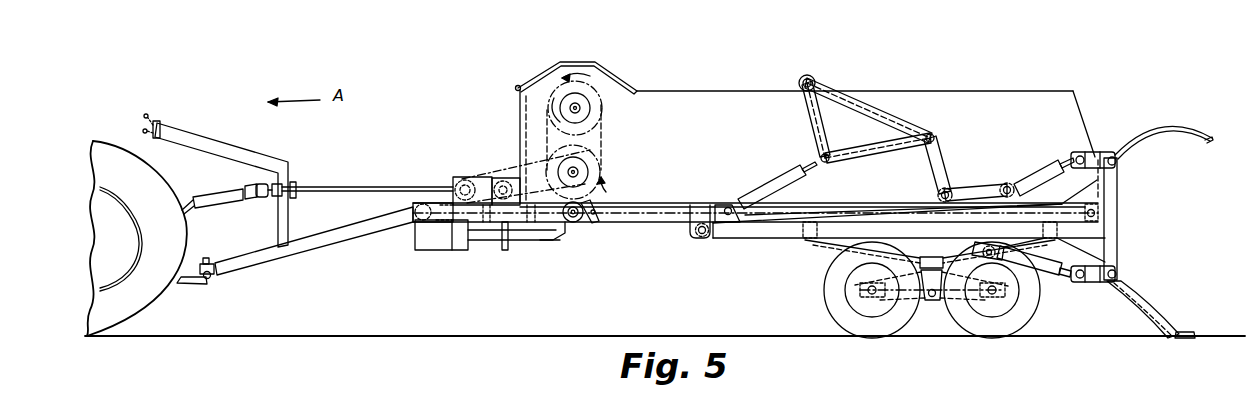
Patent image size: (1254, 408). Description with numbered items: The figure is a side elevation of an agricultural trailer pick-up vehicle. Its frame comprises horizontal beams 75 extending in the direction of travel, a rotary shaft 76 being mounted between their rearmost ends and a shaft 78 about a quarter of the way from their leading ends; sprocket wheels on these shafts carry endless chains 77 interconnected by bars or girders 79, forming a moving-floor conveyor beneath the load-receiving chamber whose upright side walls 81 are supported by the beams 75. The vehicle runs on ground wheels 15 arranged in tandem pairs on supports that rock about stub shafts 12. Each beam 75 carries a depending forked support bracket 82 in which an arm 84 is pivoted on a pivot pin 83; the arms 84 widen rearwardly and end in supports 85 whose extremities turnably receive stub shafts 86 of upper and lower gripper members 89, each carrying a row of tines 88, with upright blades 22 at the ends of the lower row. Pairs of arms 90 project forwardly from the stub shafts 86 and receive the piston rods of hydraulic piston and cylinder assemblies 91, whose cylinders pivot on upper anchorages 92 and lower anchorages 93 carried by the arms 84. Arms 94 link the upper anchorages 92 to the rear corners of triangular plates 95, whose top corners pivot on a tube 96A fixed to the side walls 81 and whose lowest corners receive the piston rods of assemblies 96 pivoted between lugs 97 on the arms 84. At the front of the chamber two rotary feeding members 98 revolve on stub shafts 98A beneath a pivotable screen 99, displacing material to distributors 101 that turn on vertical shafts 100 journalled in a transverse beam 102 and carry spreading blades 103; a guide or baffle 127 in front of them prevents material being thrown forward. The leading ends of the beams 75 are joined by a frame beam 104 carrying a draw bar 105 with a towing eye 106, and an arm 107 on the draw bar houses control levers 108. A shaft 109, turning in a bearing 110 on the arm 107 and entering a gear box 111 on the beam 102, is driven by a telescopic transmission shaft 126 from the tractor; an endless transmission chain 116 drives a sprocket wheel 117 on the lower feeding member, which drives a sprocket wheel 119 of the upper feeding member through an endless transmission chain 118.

The stub shaft 12 is at (932, 300).
The ground wheels 15 is at (826, 315).
The upright blades 22 is at (1157, 310).
The frame beams 75 is at (418, 227).
The rotary shaft 76 is at (1096, 213).
The endless chains 77 is at (665, 203).
The shaft 78 is at (580, 225).
The bars or girders 79 is at (860, 205).
The side walls 81 is at (722, 92).
The forked support bracket 82 is at (692, 238).
The pivot pins 83 is at (702, 240).
The arms 84 is at (748, 239).
The supports 85 is at (1120, 246).
The stub shafts 86 is at (1117, 163).
The tines 88 is at (1194, 332).
The gripper members 89 is at (1180, 124).
The arms 90 is at (1094, 153).
The hydraulic piston and cylinder assemblies 91 is at (1036, 168).
The upper anchorages 92 is at (977, 187).
The lower anchorages 93 is at (980, 259).
The arms 94 is at (942, 160).
The triangular plates 95 is at (897, 117).
The hydraulic piston and cylinder assembly 96 is at (785, 170).
The tube 96A is at (815, 79).
The lugs 97 is at (722, 204).
The rotary feeding members 98 is at (587, 87).
The stub shafts 98A is at (592, 109).
The pivotable screen 99 is at (556, 63).
The vertical shafts 100 is at (508, 251).
The distributors 101 is at (548, 242).
The transverse beam 102 is at (528, 224).
The spreading blades 103 is at (485, 240).
The frame beam 104 is at (413, 203).
The draw bar 105 is at (328, 244).
The towing eye 106 is at (214, 264).
The arm 107 is at (267, 156).
The control levers 108 is at (155, 117).
The shaft 109 is at (345, 186).
The bearing 110 is at (294, 183).
The gear box 111 is at (455, 177).
The endless transmission chain 116 is at (510, 167).
The sprocket wheel 117 is at (602, 178).
The endless transmission chain 118 is at (580, 158).
The sprocket wheel 119 is at (562, 112).
The telescopic transmission shaft 126 is at (222, 191).
The guide or baffle 127 is at (430, 252).